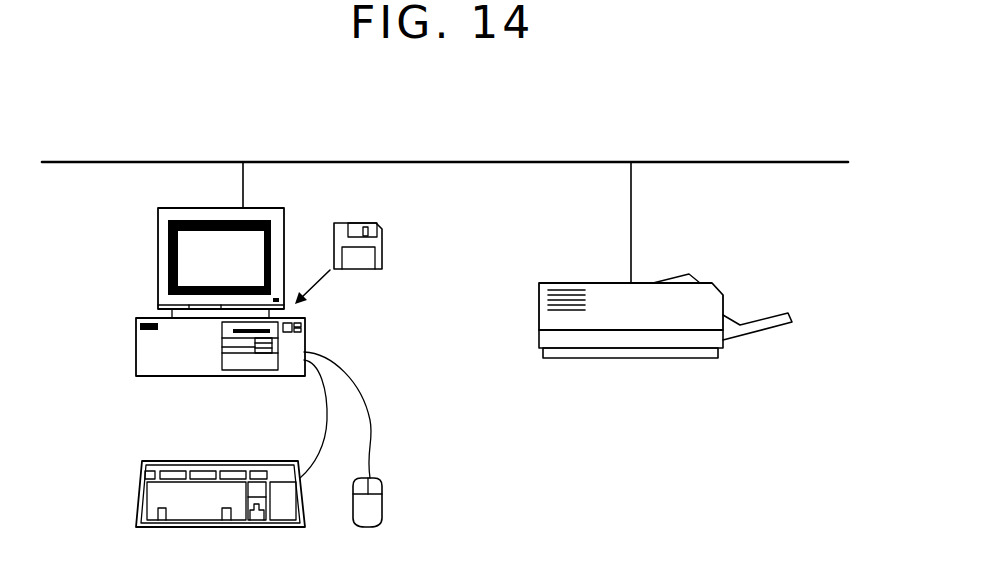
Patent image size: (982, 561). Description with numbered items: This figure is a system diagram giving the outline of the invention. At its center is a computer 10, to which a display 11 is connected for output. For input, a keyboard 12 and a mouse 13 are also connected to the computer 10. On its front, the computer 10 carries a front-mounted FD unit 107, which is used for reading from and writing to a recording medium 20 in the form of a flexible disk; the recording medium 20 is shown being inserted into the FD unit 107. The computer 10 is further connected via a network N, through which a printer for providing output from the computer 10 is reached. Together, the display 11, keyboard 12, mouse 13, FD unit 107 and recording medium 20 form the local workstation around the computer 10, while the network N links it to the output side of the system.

The network N is at (710, 164).
The computer 10 is at (136, 343).
The display 11 is at (156, 253).
The keyboard 12 is at (139, 497).
The mouse 13 is at (382, 507).
The recording medium (flexible disk) 20 is at (643, 358).
The FD unit 107 is at (273, 344).